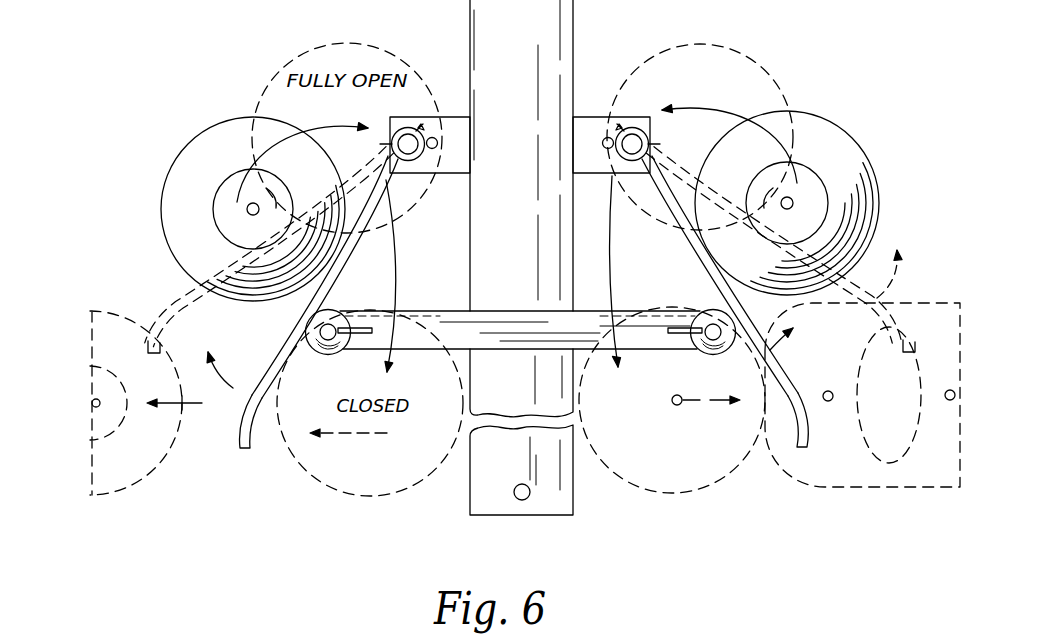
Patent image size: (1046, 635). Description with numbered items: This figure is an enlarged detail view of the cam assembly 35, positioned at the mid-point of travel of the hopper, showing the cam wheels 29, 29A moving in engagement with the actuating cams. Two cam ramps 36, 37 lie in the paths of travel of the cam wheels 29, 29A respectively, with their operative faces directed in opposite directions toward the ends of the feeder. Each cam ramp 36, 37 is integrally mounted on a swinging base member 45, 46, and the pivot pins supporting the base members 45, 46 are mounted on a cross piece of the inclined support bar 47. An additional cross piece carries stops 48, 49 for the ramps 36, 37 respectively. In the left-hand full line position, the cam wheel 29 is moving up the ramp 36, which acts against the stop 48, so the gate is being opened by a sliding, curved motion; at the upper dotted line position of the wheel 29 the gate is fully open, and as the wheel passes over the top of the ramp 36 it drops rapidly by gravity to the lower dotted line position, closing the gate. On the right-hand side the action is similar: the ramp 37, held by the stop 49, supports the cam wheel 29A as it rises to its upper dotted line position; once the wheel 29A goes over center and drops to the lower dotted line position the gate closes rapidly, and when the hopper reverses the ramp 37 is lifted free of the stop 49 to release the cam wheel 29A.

The inclined support bar 47 is at (548, 33).
The cam wheel 29 is at (185, 219).
The cam wheel 29A is at (813, 150).
The swinging base member 45 is at (387, 182).
The swinging base member 46 is at (620, 180).
The stop 48 is at (312, 328).
The stop 49 is at (713, 312).
The cam ramp 36 is at (240, 446).
The cam ramp 37 is at (807, 430).
The cam assembly 35 is at (426, 502).